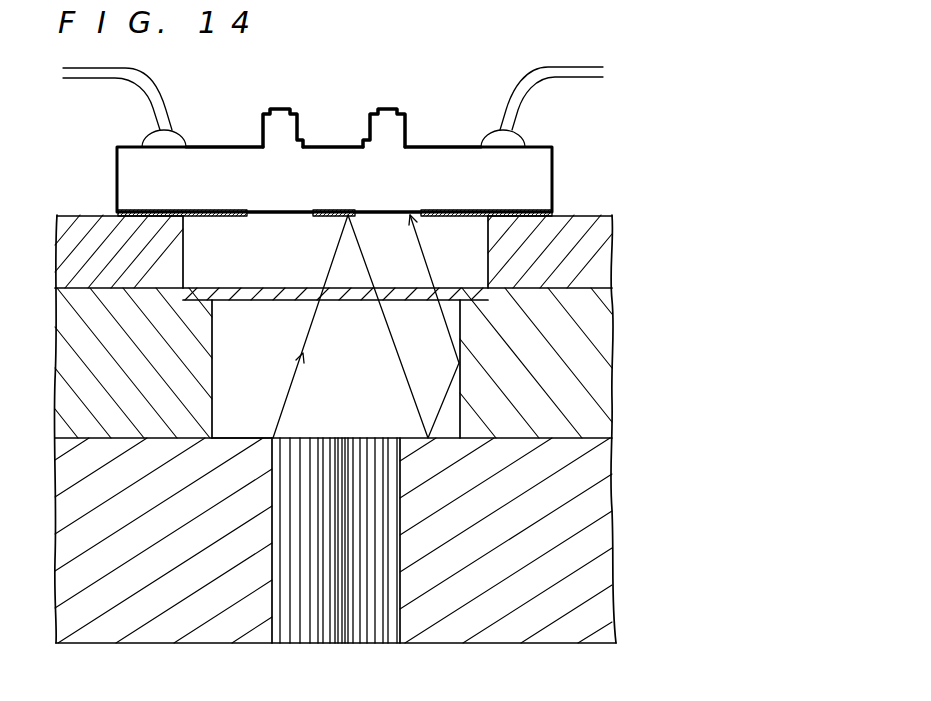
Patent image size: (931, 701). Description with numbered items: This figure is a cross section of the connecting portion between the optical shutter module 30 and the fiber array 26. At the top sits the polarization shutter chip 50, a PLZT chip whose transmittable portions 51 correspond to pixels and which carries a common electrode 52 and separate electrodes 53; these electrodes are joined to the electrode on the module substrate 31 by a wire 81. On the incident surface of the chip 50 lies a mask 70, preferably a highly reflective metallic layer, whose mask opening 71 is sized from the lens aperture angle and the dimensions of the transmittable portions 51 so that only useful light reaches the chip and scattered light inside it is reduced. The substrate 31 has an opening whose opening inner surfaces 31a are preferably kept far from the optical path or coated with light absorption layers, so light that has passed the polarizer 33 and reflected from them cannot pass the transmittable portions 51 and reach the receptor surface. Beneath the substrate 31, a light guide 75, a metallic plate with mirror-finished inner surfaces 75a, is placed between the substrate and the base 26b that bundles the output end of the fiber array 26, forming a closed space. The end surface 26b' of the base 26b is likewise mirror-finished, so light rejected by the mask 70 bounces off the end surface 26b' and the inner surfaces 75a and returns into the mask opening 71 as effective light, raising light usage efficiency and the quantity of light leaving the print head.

The fiber array 26 is at (372, 630).
The base 26b is at (333, 565).
The end surface 26b' is at (242, 414).
The optical shutter module 30 is at (613, 143).
The module substrate 31 is at (593, 216).
The opening inner surfaces 31a is at (488, 252).
The polarizer 33 is at (254, 300).
The polarization shutter chip 50 is at (117, 173).
The transmittable portions 51 is at (283, 109).
The common electrode 52 is at (336, 147).
The separate electrodes 53 is at (228, 147).
The mask 70 is at (218, 216).
The mask opening 71 is at (283, 216).
The light guide 75 is at (570, 360).
The inner surfaces 75a is at (212, 372).
The wire 81 is at (163, 102).